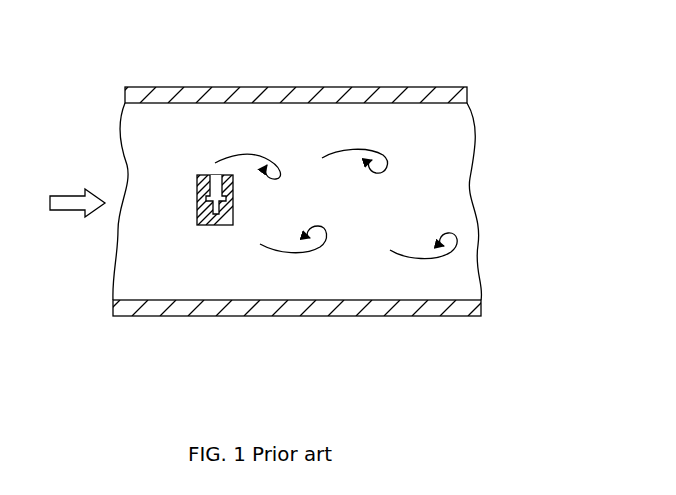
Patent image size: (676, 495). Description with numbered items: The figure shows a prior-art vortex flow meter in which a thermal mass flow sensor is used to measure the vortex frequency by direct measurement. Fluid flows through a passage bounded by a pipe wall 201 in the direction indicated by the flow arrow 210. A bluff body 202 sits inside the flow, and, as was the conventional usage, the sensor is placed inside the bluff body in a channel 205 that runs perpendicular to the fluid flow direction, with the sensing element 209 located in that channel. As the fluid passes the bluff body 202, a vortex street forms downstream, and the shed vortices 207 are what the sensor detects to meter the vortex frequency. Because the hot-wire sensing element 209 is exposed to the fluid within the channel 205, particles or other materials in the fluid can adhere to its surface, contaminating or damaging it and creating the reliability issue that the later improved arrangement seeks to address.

The pipe / duct wall 201 is at (392, 320).
The sensor housing 202 is at (211, 283).
The sensor cavity / opening 205 is at (222, 234).
The flow vortices / turbulence 207 is at (245, 151).
The sensing element 209 is at (215, 219).
The flow direction 210 is at (70, 213).